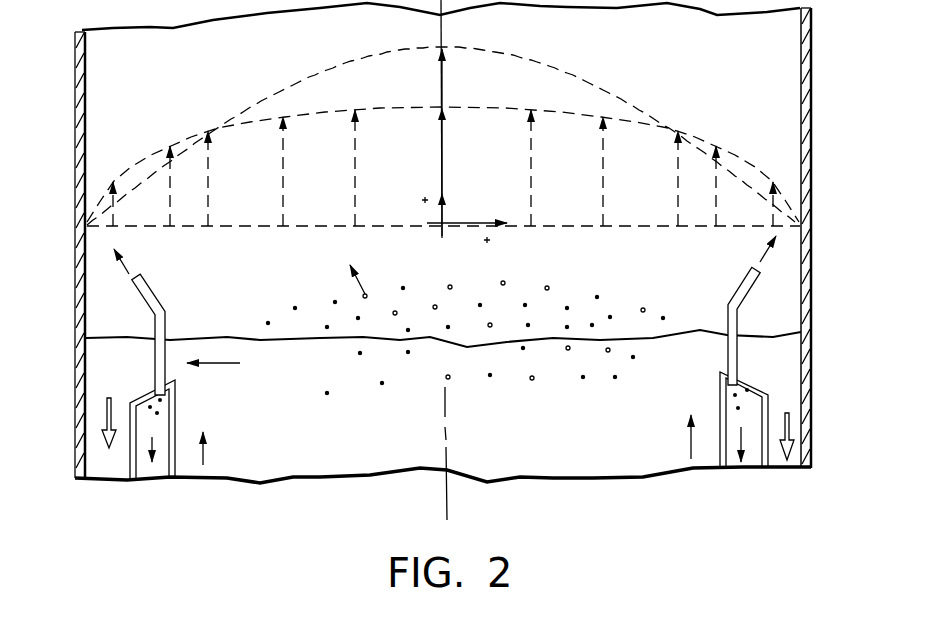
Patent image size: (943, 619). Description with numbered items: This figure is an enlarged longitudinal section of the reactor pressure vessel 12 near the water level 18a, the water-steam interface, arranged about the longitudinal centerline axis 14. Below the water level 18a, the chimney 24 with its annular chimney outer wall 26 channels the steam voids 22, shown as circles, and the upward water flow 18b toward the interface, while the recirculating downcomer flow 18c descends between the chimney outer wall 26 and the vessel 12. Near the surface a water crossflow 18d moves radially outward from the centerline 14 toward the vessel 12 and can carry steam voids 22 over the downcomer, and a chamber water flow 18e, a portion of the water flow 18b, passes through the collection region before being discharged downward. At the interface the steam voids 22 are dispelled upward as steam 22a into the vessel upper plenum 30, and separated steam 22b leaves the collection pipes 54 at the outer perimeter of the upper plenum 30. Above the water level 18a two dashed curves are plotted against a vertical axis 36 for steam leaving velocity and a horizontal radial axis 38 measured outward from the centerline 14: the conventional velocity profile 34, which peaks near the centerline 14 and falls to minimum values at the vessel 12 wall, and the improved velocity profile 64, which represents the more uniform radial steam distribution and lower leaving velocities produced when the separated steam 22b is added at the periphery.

The reactor pressure vessel 12 is at (77, 318).
The longitudinal centerline axis 14 is at (447, 495).
The water level 18a is at (793, 326).
The water flow 18b is at (207, 457).
The downcomer flow 18c is at (119, 406).
The water crossflow 18d is at (256, 387).
The chamber water flow 18e is at (163, 462).
The steam voids 22 is at (534, 381).
The steam 22a is at (353, 286).
The separated steam 22b is at (128, 262).
The chimney 24 is at (568, 458).
The chimney outer wall 26 is at (178, 444).
The vessel upper plenum 30 is at (118, 97).
The conventional velocity profile 34 is at (592, 80).
The vertical axis 36 is at (446, 211).
The horizontal radial axis 38 is at (467, 227).
The collection pipes 54 is at (160, 288).
The improved velocity profile 64 is at (481, 107).